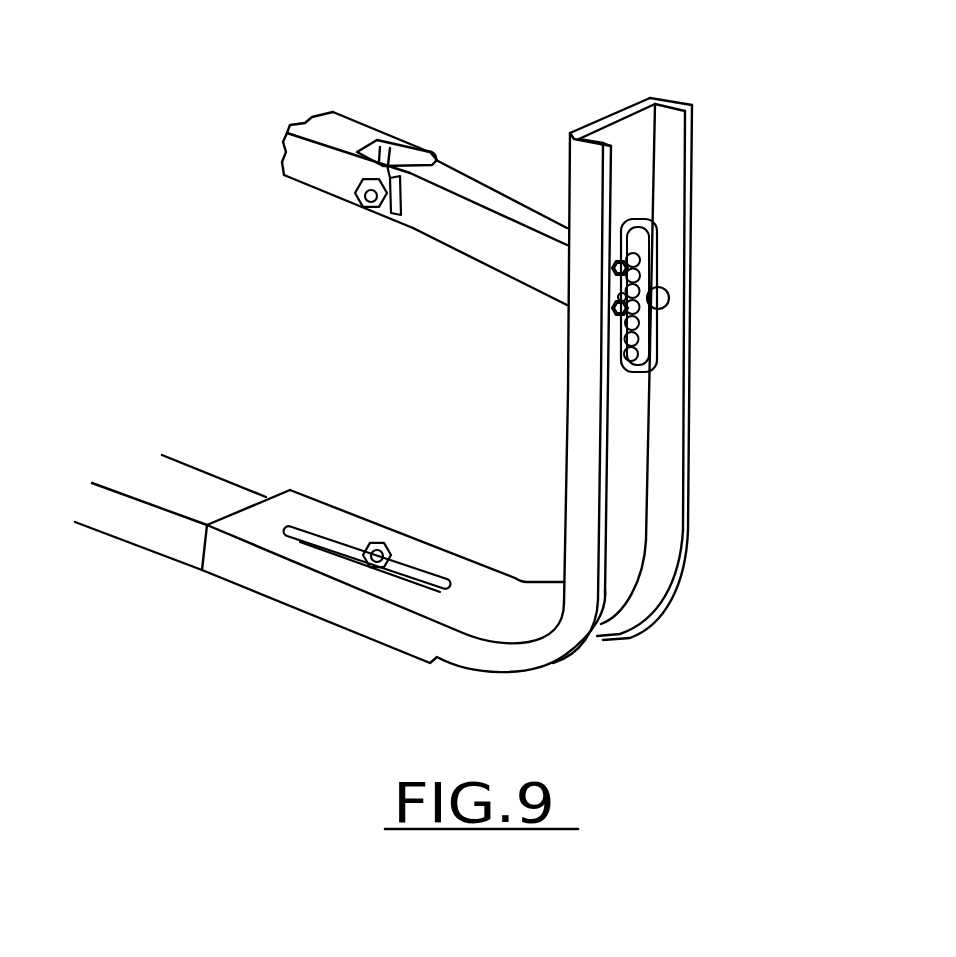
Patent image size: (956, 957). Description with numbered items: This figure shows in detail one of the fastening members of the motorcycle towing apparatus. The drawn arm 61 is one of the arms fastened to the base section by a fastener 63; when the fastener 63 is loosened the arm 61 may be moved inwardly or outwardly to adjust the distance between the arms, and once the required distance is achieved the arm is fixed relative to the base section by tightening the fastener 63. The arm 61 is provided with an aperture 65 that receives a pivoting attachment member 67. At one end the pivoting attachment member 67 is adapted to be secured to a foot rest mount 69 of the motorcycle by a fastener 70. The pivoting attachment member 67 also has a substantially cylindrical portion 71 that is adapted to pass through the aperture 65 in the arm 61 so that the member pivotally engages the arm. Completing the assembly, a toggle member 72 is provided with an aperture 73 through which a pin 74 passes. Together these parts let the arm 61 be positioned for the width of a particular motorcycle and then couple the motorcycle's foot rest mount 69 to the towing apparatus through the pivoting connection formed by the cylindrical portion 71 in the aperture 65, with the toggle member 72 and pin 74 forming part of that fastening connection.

The arm 61 is at (462, 598).
The fastener 63 is at (373, 546).
The aperture 65 is at (616, 262).
The pivoting attachment member 67 is at (457, 251).
The foot rest mount 69 is at (345, 133).
The fastener 70 is at (356, 206).
The substantially cylindrical portion 71 is at (666, 290).
The toggle member 72 is at (638, 243).
The aperture 73 is at (648, 380).
The pin 74 is at (645, 310).